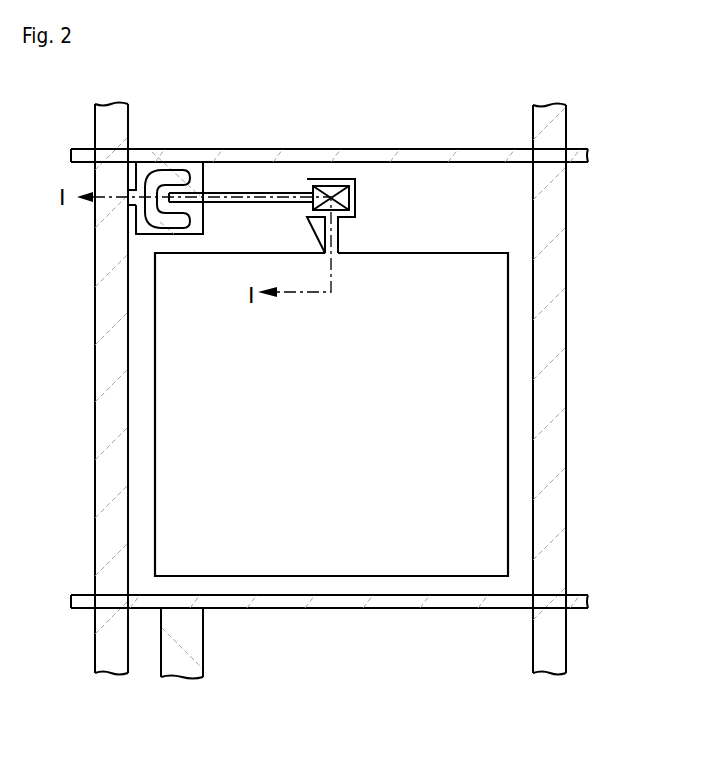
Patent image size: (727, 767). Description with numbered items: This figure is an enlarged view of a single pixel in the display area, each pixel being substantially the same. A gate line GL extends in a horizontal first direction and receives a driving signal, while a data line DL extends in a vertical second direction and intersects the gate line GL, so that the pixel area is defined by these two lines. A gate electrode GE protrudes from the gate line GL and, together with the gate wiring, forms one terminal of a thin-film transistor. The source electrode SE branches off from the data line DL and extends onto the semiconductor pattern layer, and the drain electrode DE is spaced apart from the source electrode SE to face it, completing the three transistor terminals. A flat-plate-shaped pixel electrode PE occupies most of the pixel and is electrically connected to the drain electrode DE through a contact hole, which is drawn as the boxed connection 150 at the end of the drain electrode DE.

The data line DL is at (95, 490).
The gate line GL is at (388, 158).
The gate electrode GE is at (204, 178).
The source electrode SE is at (163, 173).
The drain electrode DE is at (297, 192).
The contact hole 150 is at (350, 198).
The pixel electrode PE is at (508, 483).